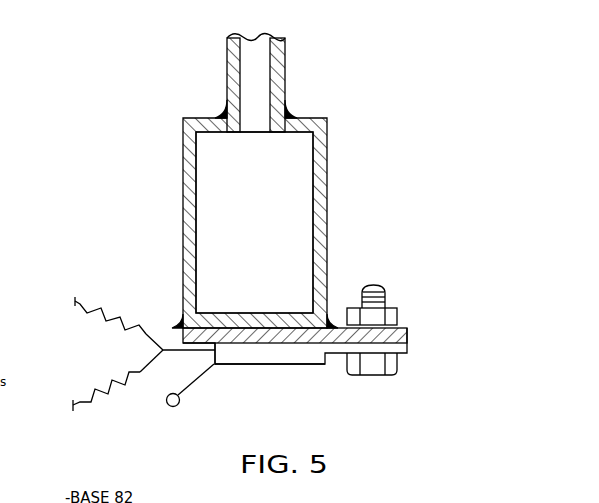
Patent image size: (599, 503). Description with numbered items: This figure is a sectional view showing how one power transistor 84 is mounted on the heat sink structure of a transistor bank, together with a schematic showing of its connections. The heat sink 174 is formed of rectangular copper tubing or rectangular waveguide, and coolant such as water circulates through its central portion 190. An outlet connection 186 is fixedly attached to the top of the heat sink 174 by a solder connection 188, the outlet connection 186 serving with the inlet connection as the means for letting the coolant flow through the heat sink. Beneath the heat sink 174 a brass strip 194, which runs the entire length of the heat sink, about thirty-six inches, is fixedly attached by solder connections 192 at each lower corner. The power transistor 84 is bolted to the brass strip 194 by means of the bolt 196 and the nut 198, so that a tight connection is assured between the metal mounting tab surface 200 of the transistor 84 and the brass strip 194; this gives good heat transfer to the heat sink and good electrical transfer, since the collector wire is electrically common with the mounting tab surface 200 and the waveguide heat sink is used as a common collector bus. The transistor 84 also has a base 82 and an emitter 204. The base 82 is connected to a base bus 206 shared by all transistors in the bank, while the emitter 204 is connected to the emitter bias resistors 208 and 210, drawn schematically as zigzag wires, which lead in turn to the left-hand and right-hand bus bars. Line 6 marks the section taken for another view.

The outlet connection 186 is at (285, 90).
The solder connection 188 is at (292, 112).
The heat sink 174 is at (327, 184).
The central portion 190 is at (252, 198).
The solder connections 192 is at (180, 325).
The nut 198 is at (388, 309).
The brass strip 194 is at (400, 327).
The bolt 196 is at (375, 372).
The metal mounting tab surface 200 is at (278, 347).
The base 82 is at (215, 366).
The power transistor 84 is at (257, 357).
The emitter 204 is at (178, 351).
The base bus 206 is at (167, 392).
The emitter bias resistor 208 is at (120, 315).
The emitter bias resistor 210 is at (118, 380).
The section line 6 is at (300, 436).